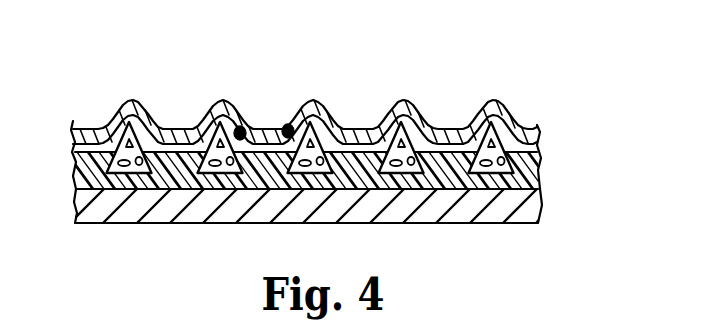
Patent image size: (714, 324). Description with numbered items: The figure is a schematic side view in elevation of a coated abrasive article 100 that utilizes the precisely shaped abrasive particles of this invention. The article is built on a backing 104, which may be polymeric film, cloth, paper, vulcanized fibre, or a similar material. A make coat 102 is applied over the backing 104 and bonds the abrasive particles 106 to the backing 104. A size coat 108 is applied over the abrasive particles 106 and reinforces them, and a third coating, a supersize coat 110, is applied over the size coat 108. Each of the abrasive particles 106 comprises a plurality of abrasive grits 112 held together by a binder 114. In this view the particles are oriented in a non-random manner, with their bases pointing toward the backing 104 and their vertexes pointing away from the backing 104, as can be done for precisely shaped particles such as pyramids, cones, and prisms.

The coated abrasive article 100 is at (348, 90).
The make coat 102 is at (80, 171).
The backing 104 is at (224, 208).
The abrasive particles 106 is at (287, 125).
The size coat 108 is at (532, 146).
The supersize coat 110 is at (491, 104).
The abrasive grits 112 is at (192, 130).
The binder 114 is at (403, 168).